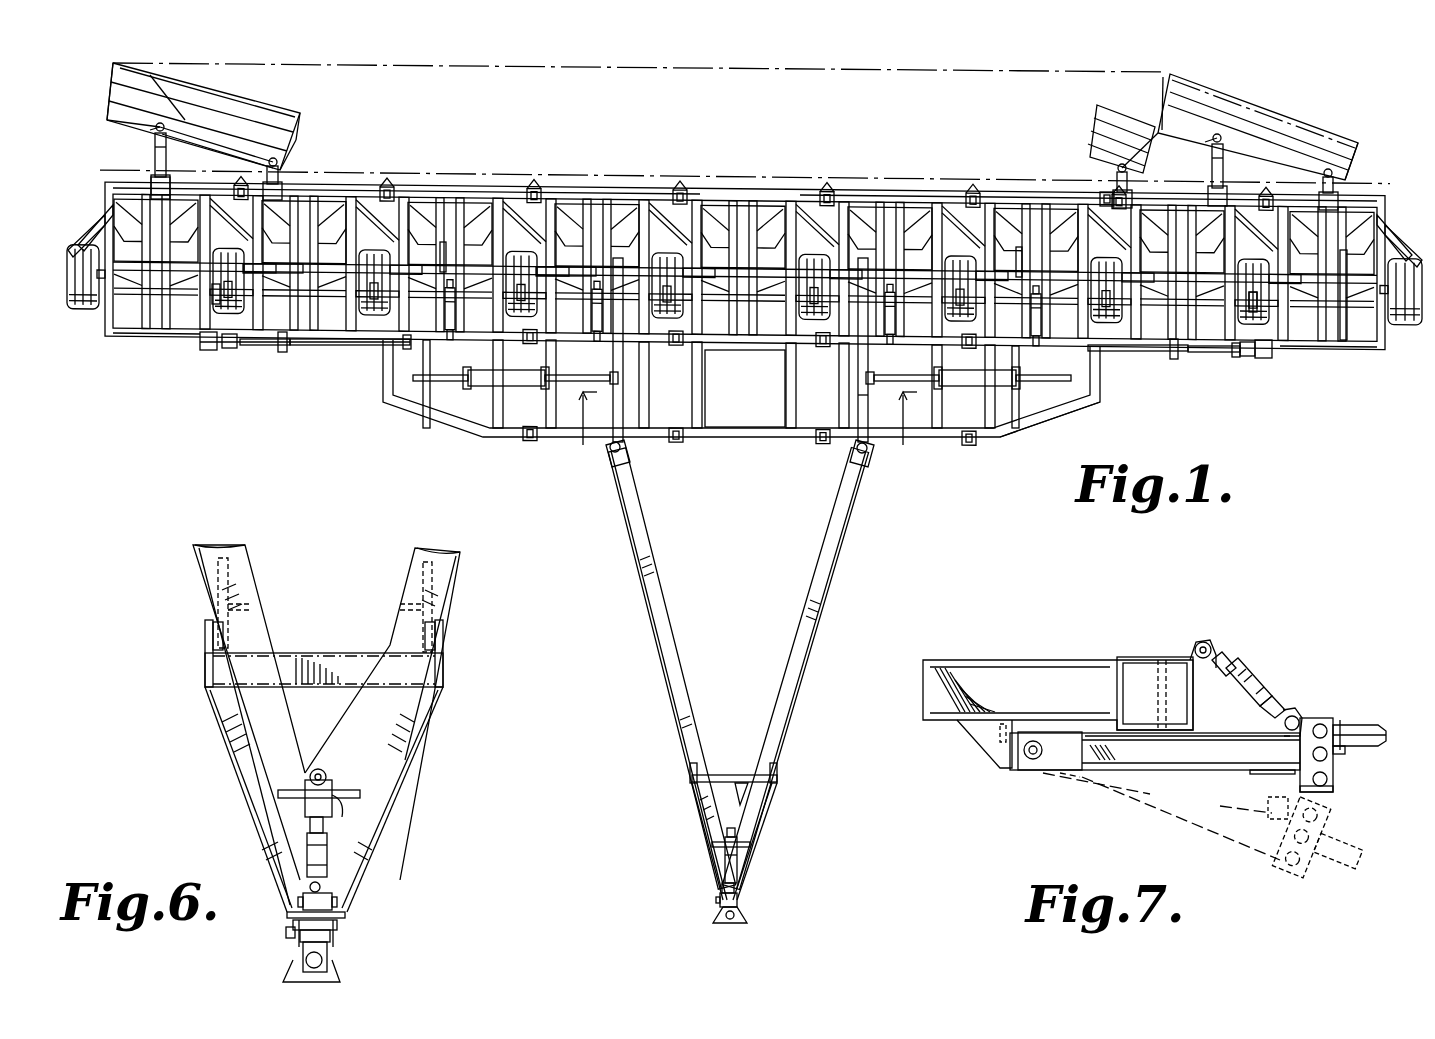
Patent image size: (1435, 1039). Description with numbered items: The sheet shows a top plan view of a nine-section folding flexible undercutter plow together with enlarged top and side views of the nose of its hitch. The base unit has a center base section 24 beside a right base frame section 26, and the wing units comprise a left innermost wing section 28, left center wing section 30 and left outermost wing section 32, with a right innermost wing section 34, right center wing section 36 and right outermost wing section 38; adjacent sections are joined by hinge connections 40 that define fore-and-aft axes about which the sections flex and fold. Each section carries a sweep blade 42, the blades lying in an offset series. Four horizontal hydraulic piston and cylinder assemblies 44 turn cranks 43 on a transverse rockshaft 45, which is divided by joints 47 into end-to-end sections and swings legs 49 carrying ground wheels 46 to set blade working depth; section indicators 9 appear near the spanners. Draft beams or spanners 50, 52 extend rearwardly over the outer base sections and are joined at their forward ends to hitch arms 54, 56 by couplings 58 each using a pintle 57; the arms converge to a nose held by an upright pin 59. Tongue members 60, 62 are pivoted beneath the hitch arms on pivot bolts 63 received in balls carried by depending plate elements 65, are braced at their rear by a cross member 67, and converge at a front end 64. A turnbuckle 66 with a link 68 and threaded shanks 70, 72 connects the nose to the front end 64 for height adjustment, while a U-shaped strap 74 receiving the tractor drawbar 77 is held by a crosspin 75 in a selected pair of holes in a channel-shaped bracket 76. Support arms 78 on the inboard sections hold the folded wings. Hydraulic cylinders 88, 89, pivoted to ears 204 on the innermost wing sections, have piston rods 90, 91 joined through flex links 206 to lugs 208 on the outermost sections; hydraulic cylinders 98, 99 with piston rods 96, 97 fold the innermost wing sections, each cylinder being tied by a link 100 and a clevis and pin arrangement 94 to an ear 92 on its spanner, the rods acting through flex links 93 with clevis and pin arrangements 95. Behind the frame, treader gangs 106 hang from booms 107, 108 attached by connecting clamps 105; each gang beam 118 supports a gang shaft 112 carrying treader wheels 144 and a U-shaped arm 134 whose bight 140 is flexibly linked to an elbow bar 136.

In FIG. 1, the section line 9 is at (742, 430).
In FIG. 1, the center base section 24 is at (578, 188).
In FIG. 1, the right base frame section 26 is at (884, 190).
In FIG. 1, the left innermost wing section 28 is at (440, 186).
In FIG. 1, the left center wing section 30 is at (284, 352).
In FIG. 1, the left outermost wing section 32 is at (172, 340).
In FIG. 1, the right innermost wing section 34 is at (1030, 432).
In FIG. 1, the right center wing section 36 is at (1170, 200).
In FIG. 1, the right outermost wing section 38 is at (1366, 352).
In FIG. 1, the hinge connections 40 is at (528, 180).
In FIG. 1, the sweep blades 42 is at (80, 206).
In FIG. 1, the cranks 43 is at (452, 270).
In FIG. 1, the hydraulic piston and cylinder assemblies 44 is at (441, 312).
In FIG. 1, the rockshaft 45 is at (482, 312).
In FIG. 1, the ground wheels 46 is at (805, 262).
In FIG. 1, the joints 47 is at (210, 300).
In FIG. 1, the legs 49 is at (1377, 322).
In FIG. 1, the left spanner 50 is at (624, 410).
In FIG. 1, the right spanner 52 is at (858, 383).
In FIG. 1, the left hitch arm 54 is at (668, 612).
In FIG. 6, the left hitch arm 54 is at (193, 568).
In FIG. 1, the right hitch arm 56 is at (826, 544).
In FIG. 6, the right hitch arm 56 is at (458, 560).
In FIG. 7, the right hitch arm 56 is at (1058, 695).
In FIG. 1, the pintle 57 is at (612, 458).
In FIG. 1, the couplings 58 is at (626, 452).
In FIG. 6, the upright pin 59 is at (310, 770).
In FIG. 7, the upright pin 59 is at (1158, 683).
In FIG. 1, the left tongue member 60 is at (716, 850).
In FIG. 6, the left tongue member 60 is at (225, 748).
In FIG. 1, the right tongue member 62 is at (758, 812).
In FIG. 6, the right tongue member 62 is at (425, 712).
In FIG. 7, the right tongue member 62 is at (1161, 816).
In FIG. 6, the pivot bolts 63 is at (205, 636).
In FIG. 7, the pivot bolts 63 is at (1034, 768).
In FIG. 1, the front end of tongue connector 64 is at (742, 896).
In FIG. 7, the front end of tongue connector 64 is at (1300, 750).
In FIG. 6, the depending plate elements 65 is at (218, 588).
In FIG. 7, the depending plate elements 65 is at (998, 736).
In FIG. 1, the turnbuckle 66 is at (742, 858).
In FIG. 6, the turnbuckle 66 is at (303, 840).
In FIG. 7, the turnbuckle 66 is at (1232, 668).
In FIG. 1, the cross member 67 is at (736, 776).
In FIG. 6, the cross member 67 is at (324, 658).
In FIG. 6, the link 68 is at (328, 852).
In FIG. 6, the threaded shank 70 is at (346, 790).
In FIG. 7, the threaded shank 70 is at (1250, 680).
In FIG. 6, the threaded shank 72 is at (320, 886).
In FIG. 7, the threaded shank 72 is at (1248, 706).
In FIG. 6, the U-shaped strap 74 is at (325, 925).
In FIG. 7, the U-shaped strap 74 is at (1348, 718).
In FIG. 6, the crosspin 75 is at (286, 934).
In FIG. 7, the crosspin 75 is at (1328, 750).
In FIG. 7, the channel-shaped bracket 76 is at (1332, 790).
In FIG. 7, the tractor drawbar 77 is at (1372, 742).
In FIG. 1, the support arm 78 is at (262, 246).
In FIG. 1, the left hydraulic cylinder 88 is at (316, 346).
In FIG. 1, the right hydraulic cylinder 89 is at (1146, 352).
In FIG. 1, the piston rod 90 is at (266, 346).
In FIG. 1, the piston rod 91 is at (1218, 352).
In FIG. 1, the ear 92 is at (626, 380).
In FIG. 1, the flex link 93 is at (440, 380).
In FIG. 1, the clevis and pin arrangement 94 is at (858, 404).
In FIG. 1, the clevis and pin arrangement 95 is at (1240, 356).
In FIG. 1, the piston rod 96 is at (444, 350).
In FIG. 1, the piston rod 97 is at (1044, 388).
In FIG. 1, the left hydraulic cylinder 98 is at (496, 388).
In FIG. 1, the right hydraulic cylinder 99 is at (966, 388).
In FIG. 1, the link 100 is at (556, 388).
In FIG. 1, the connecting clamp 105 is at (158, 180).
In FIG. 1, the treader gang 106 is at (100, 120).
In FIG. 1, the boom 107 is at (278, 178).
In FIG. 1, the boom 108 is at (152, 158).
In FIG. 1, the gang shaft 112 is at (252, 115).
In FIG. 1, the gang beam 118 is at (150, 132).
In FIG. 1, the U-shaped arm 134 is at (230, 140).
In FIG. 1, the elbow bar 136 is at (113, 68).
In FIG. 1, the bight 140 is at (178, 120).
In FIG. 1, the treader wheels 144 is at (298, 132).
In FIG. 1, the ears 204 is at (410, 355).
In FIG. 1, the flex links 206 is at (232, 350).
In FIG. 1, the lugs 208 is at (212, 350).